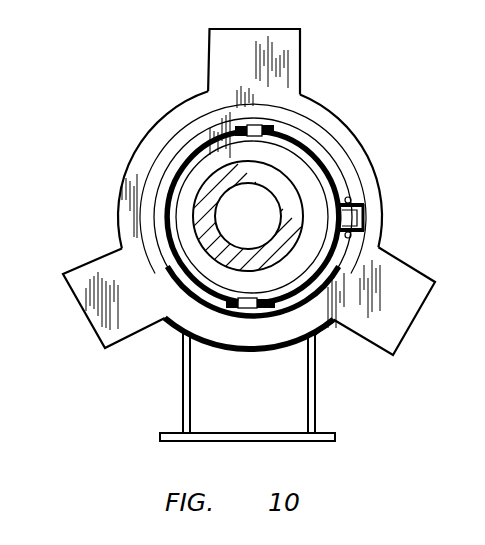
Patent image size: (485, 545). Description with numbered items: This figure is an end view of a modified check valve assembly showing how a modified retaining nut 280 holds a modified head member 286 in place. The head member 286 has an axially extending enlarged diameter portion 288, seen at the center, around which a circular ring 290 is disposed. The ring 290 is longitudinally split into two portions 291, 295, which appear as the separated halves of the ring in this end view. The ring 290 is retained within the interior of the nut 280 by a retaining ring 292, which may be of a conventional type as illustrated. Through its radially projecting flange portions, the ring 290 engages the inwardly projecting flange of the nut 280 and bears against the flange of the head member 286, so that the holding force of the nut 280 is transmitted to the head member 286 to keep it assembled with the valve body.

The retaining nut 280 is at (366, 131).
The head member 286 is at (188, 190).
The enlarged diameter portion 288 is at (185, 148).
The circular ring 290 is at (266, 125).
The ring portion 291 is at (333, 187).
The retaining ring 292 is at (318, 143).
The ring portion 295 is at (164, 216).